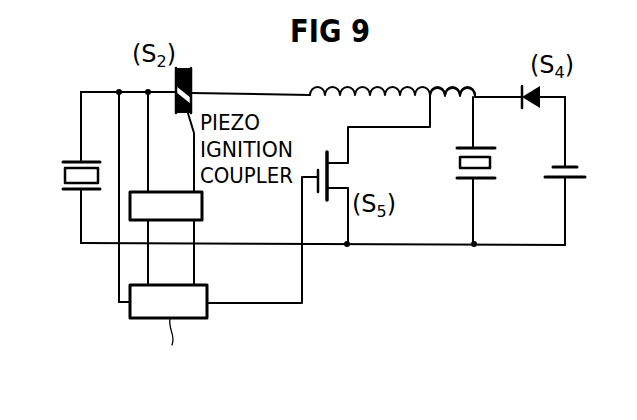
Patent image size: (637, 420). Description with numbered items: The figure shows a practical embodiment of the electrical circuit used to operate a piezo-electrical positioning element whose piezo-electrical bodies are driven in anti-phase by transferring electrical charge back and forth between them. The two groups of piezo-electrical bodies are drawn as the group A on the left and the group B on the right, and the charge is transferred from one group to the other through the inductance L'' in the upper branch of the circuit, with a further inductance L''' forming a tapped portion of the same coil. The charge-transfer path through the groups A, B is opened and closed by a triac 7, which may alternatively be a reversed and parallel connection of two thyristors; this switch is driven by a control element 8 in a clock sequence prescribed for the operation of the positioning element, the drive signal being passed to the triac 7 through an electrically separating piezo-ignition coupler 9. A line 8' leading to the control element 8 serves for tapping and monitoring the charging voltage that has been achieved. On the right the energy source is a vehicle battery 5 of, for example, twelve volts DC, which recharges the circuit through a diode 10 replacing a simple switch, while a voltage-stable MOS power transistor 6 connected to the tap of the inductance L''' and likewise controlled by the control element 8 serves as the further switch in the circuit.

The group A of piezo-electrical bodies A is at (65, 173).
The group B of piezo-electrical bodies B is at (495, 162).
The vehicle battery 5 is at (572, 180).
The MOS power transistor 6 is at (330, 180).
The triac (switch S2) 7 is at (191, 76).
The control element 8 is at (256, 333).
The line 8' is at (113, 298).
The piezo-ignition coupler 9 is at (195, 203).
The diode (switch S4) 10 is at (540, 93).
The inductance L'' is at (392, 75).
The inductor L''' is at (452, 112).